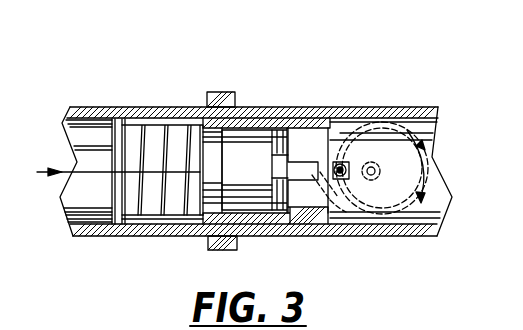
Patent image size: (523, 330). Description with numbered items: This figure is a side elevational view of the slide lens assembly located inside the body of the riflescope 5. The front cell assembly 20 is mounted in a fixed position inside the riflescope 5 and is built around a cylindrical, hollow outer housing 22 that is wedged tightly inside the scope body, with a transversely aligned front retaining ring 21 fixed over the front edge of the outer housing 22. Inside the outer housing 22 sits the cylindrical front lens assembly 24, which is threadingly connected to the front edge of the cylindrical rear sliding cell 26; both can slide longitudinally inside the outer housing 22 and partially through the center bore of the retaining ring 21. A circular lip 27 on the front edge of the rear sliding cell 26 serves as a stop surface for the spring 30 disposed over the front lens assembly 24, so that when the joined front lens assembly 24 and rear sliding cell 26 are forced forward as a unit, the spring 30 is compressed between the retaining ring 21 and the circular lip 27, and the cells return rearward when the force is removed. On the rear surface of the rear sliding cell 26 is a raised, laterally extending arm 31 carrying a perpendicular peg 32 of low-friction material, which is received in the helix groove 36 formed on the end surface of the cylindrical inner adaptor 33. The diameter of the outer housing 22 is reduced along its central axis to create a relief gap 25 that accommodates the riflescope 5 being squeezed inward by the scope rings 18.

The riflescope 5 is at (85, 109).
The scope rings 18 is at (213, 92).
The front cell assembly 20 is at (132, 103).
The front retaining ring 21 is at (113, 150).
The outer housing 22 is at (250, 128).
The front lens assembly 24 is at (152, 137).
The relief gap 25 is at (231, 128).
The rear sliding cell 26 is at (288, 155).
The circular lip 27 is at (207, 206).
The spring 30 is at (158, 213).
The extension arm 31 is at (309, 173).
The peg 32 is at (338, 162).
The inner adaptor 33 is at (410, 132).
The helix groove 36 is at (377, 190).